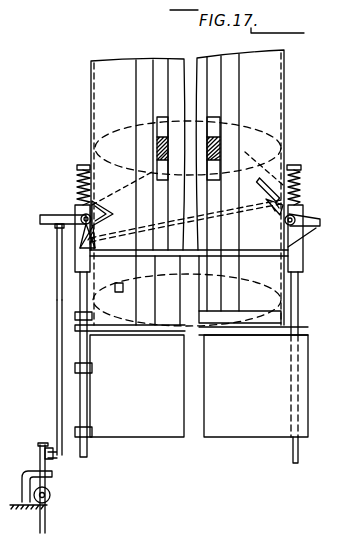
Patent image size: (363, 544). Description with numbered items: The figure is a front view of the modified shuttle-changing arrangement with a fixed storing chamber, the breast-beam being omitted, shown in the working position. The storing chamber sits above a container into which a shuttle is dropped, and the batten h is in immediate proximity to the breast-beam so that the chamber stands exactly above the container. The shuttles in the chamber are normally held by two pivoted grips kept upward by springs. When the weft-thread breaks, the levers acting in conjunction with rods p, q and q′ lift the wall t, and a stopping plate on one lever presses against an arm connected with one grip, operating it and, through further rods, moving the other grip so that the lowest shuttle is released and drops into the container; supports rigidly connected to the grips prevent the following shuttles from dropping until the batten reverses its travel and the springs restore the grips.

The wall t is at (80, 202).
The rod q is at (58, 322).
The rod p is at (86, 445).
The batten h is at (243, 412).
The rod q′ is at (294, 456).